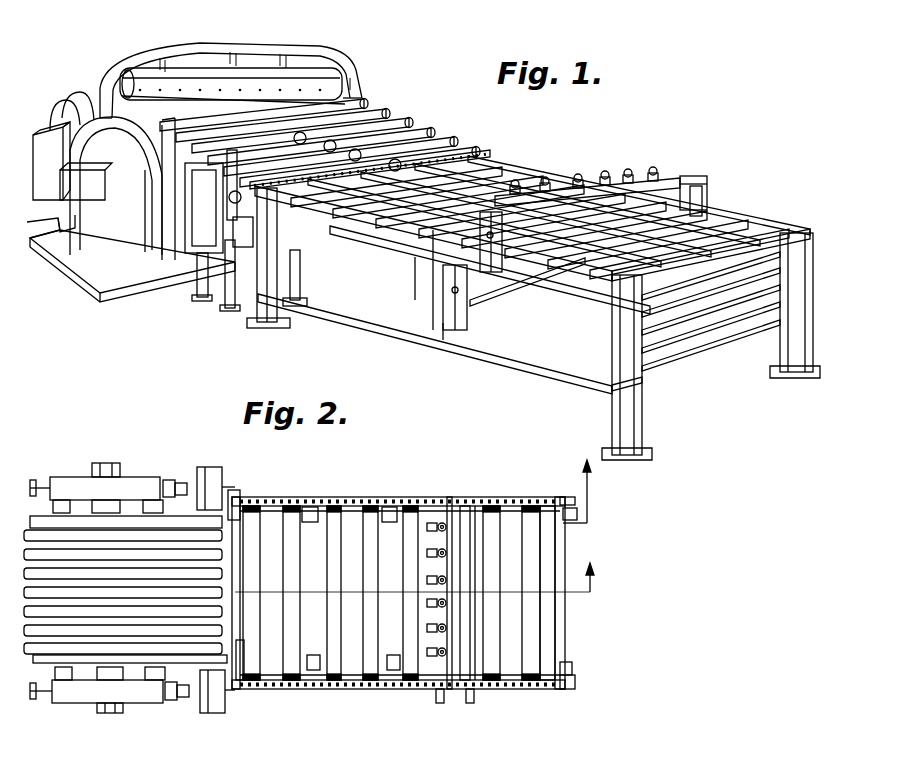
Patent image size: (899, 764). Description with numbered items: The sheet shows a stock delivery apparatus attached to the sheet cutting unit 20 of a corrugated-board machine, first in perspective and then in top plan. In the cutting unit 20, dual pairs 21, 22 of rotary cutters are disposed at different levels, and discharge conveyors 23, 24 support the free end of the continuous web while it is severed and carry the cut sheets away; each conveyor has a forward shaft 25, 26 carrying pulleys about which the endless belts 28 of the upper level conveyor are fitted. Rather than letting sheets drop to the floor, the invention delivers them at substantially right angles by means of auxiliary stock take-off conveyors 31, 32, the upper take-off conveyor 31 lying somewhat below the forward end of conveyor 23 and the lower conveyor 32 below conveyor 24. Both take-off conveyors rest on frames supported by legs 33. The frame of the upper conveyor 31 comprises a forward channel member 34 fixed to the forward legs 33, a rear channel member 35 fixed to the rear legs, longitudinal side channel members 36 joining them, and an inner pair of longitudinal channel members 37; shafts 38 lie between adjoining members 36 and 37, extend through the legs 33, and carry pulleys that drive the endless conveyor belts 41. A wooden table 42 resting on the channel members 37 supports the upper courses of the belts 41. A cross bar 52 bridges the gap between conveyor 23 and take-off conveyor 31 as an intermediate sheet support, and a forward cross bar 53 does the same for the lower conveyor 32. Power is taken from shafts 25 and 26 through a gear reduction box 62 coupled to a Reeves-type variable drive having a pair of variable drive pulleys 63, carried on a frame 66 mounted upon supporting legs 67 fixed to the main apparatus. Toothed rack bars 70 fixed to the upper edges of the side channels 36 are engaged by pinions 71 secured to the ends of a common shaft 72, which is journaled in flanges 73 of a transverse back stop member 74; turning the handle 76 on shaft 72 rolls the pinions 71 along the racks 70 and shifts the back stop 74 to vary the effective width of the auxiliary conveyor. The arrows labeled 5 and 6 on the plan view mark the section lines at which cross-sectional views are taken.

In FIG. 1, the cutting unit 20 is at (347, 70).
In FIG. 1, the pair of rotary cutters 21 is at (125, 85).
In FIG. 1, the pair of rotary cutters 22 is at (160, 175).
In FIG. 1, the discharge conveyor 23 is at (380, 130).
In FIG. 2, the discharge conveyor 23 is at (70, 550).
In FIG. 1, the discharge conveyor 24 is at (180, 200).
In FIG. 1, the forward shaft 25 is at (432, 150).
In FIG. 2, the forward shaft 25 is at (222, 522).
In FIG. 1, the forward shaft 26 is at (308, 217).
In FIG. 2, the endless belts 28 is at (150, 573).
In FIG. 1, the upper stock take-off conveyor 31 is at (533, 177).
In FIG. 2, the upper stock take-off conveyor 31 is at (373, 520).
In FIG. 1, the lower stock take-off conveyor 32 is at (425, 235).
In FIG. 1, the legs 33 is at (258, 303).
In FIG. 1, the forward bar or channel member 34 is at (293, 282).
In FIG. 1, the rear bar or channel member 35 is at (600, 360).
In FIG. 1, the longitudinal side channel members 36 is at (793, 230).
In FIG. 1, the longitudinal channel members 37 is at (745, 255).
In FIG. 1, the shafts 38 is at (585, 258).
In FIG. 2, the shafts 38 is at (278, 512).
In FIG. 1, the endless conveyor belts 41 is at (500, 190).
In FIG. 2, the endless conveyor belts 41 is at (373, 620).
In FIG. 2, the table 42 is at (547, 565).
In FIG. 1, the cross bar 52 is at (480, 150).
In FIG. 2, the cross bar 52 is at (240, 650).
In FIG. 1, the forward cross bar 53 is at (227, 247).
In FIG. 1, the gear reduction box 62 is at (233, 253).
In FIG. 2, the gear reduction box 62 is at (208, 468).
In FIG. 2, the variable drive pulleys 63 is at (105, 468).
In FIG. 1, the frame 66 is at (192, 232).
In FIG. 1, the supporting legs 67 is at (230, 250).
In FIG. 1, the toothed rack bar 70 is at (433, 230).
In FIG. 2, the toothed rack bar 70 is at (405, 500).
In FIG. 1, the pinions 71 is at (700, 187).
In FIG. 2, the pinions 71 is at (458, 503).
In FIG. 1, the common shaft 72 is at (667, 190).
In FIG. 2, the common shaft 72 is at (470, 537).
In FIG. 1, the flanges 73 is at (710, 190).
In FIG. 1, the back stop member 74 is at (612, 192).
In FIG. 2, the back stop member 74 is at (452, 512).
In FIG. 1, the handle 76 is at (437, 275).
In FIG. 2, the handle 76 is at (440, 700).
In FIG. 2, the section line 5 is at (590, 590).
In FIG. 2, the section line 6 is at (577, 503).